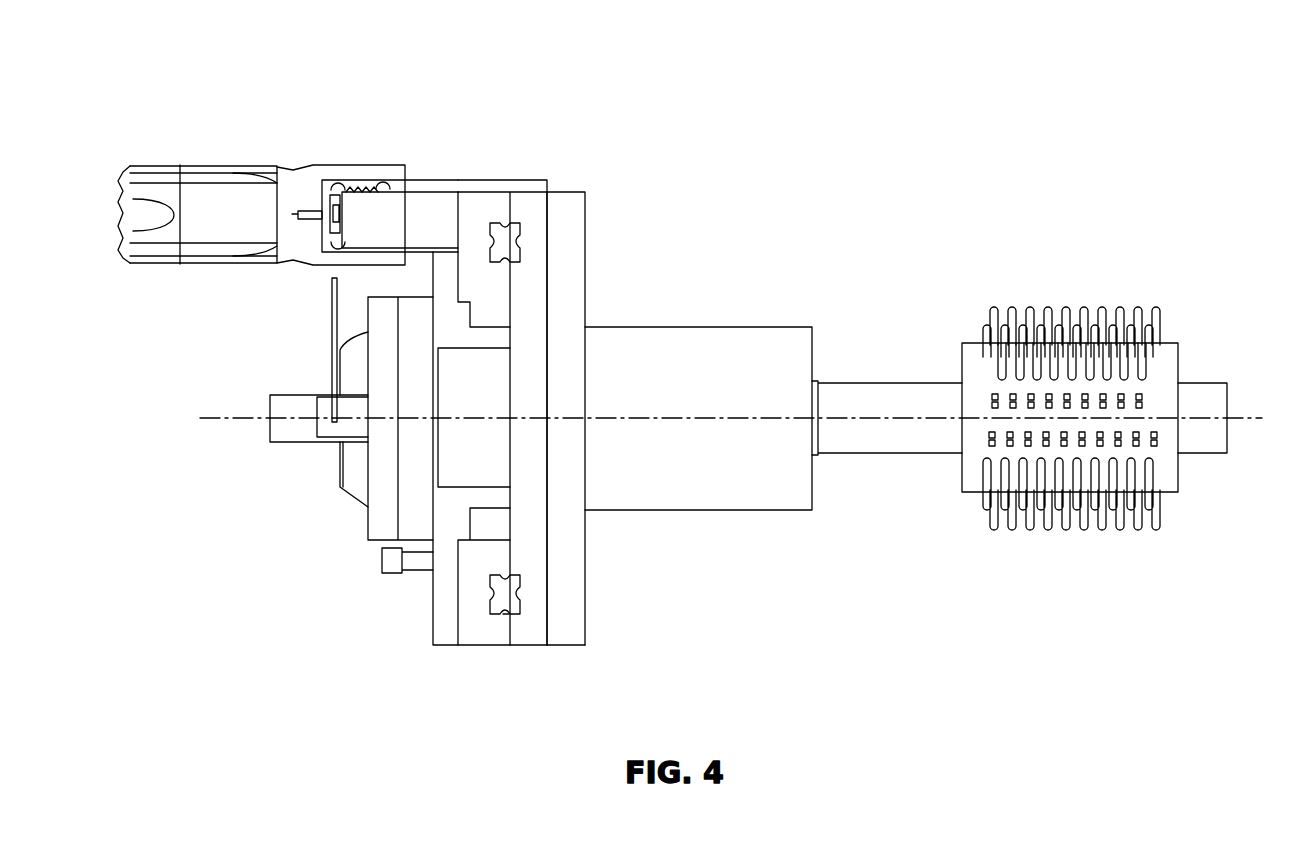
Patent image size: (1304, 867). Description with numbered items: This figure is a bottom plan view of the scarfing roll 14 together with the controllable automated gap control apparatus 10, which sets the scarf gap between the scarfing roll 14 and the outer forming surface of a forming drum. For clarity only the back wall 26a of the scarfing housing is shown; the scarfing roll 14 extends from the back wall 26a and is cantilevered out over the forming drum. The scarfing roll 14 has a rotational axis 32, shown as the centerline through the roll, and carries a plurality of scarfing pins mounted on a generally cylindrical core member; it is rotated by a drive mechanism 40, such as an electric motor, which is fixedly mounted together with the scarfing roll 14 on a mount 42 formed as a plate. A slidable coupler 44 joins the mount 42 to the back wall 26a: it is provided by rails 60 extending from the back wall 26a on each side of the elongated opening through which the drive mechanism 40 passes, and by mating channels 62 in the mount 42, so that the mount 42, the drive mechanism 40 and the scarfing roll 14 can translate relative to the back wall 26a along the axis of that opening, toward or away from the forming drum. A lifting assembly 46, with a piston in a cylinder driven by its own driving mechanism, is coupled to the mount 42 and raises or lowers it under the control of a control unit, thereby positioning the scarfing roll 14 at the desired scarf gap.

The controllable automated gap control apparatus 10 is at (153, 68).
The scarfing roll 14 is at (1172, 330).
The back wall 26a is at (535, 632).
The rotational axis 32 is at (1258, 414).
The drive mechanism 40 is at (712, 316).
The mount 42 is at (466, 634).
The slidable coupler 44 is at (510, 622).
The lifting assembly 46 is at (185, 158).
The rails 60 is at (512, 245).
The channels 62 is at (498, 222).